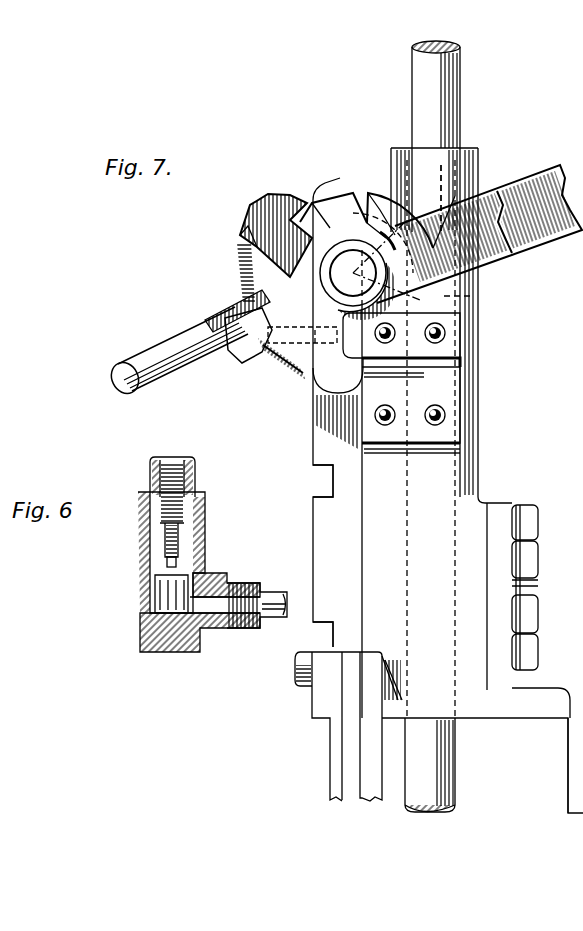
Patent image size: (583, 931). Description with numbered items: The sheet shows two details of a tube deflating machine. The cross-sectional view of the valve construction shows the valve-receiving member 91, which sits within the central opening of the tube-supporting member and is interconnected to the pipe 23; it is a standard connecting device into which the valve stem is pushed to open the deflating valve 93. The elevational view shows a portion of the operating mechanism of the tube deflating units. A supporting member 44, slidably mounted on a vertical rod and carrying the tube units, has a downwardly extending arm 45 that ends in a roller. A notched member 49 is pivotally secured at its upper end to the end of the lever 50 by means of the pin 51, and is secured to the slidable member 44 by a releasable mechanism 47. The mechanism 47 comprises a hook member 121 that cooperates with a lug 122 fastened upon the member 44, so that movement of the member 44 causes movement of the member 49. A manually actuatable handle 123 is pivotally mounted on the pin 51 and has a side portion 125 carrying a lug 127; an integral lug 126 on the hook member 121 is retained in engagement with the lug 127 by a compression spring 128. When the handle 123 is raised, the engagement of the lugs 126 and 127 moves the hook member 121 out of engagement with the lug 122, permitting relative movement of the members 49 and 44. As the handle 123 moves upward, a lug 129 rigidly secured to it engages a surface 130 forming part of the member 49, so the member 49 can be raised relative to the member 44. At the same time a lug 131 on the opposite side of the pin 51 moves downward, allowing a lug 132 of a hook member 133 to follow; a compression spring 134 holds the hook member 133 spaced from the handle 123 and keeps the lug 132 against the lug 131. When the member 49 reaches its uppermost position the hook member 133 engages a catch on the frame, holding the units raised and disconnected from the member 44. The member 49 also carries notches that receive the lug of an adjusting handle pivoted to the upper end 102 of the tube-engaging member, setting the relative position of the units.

In FIG. 7, the supporting member 44 is at (473, 598).
In FIG. 7, the downwardly extending arm 45 is at (568, 778).
In FIG. 7, the mechanism 47 is at (240, 238).
In FIG. 7, the notched member 49 is at (330, 598).
In FIG. 7, the lever 50 is at (540, 170).
In FIG. 7, the pin 51 is at (340, 265).
In FIG. 7, the upper end of the tube-engaging member 102 is at (330, 746).
In FIG. 7, the hook member 121 is at (303, 379).
In FIG. 7, the lug 122 is at (447, 373).
In FIG. 7, the manually actuatable handle 123 is at (163, 384).
In FIG. 7, the side portion 125 is at (283, 307).
In FIG. 7, the integral lug 126 is at (476, 180).
In FIG. 7, the lug 127 is at (410, 228).
In FIG. 7, the compression spring 128 is at (267, 357).
In FIG. 7, the lug 129 is at (345, 188).
In FIG. 7, the surface 130 is at (378, 188).
In FIG. 7, the lug 131 is at (470, 297).
In FIG. 7, the lug 132 is at (428, 251).
In FIG. 7, the hook member 133 is at (268, 198).
In FIG. 7, the compression spring 134 is at (243, 272).
In FIG. 6, the valve-receiving member 91 is at (197, 489).
In FIG. 6, the deflating valve 93 is at (193, 550).
In FIG. 6, the pipe 23 is at (273, 593).